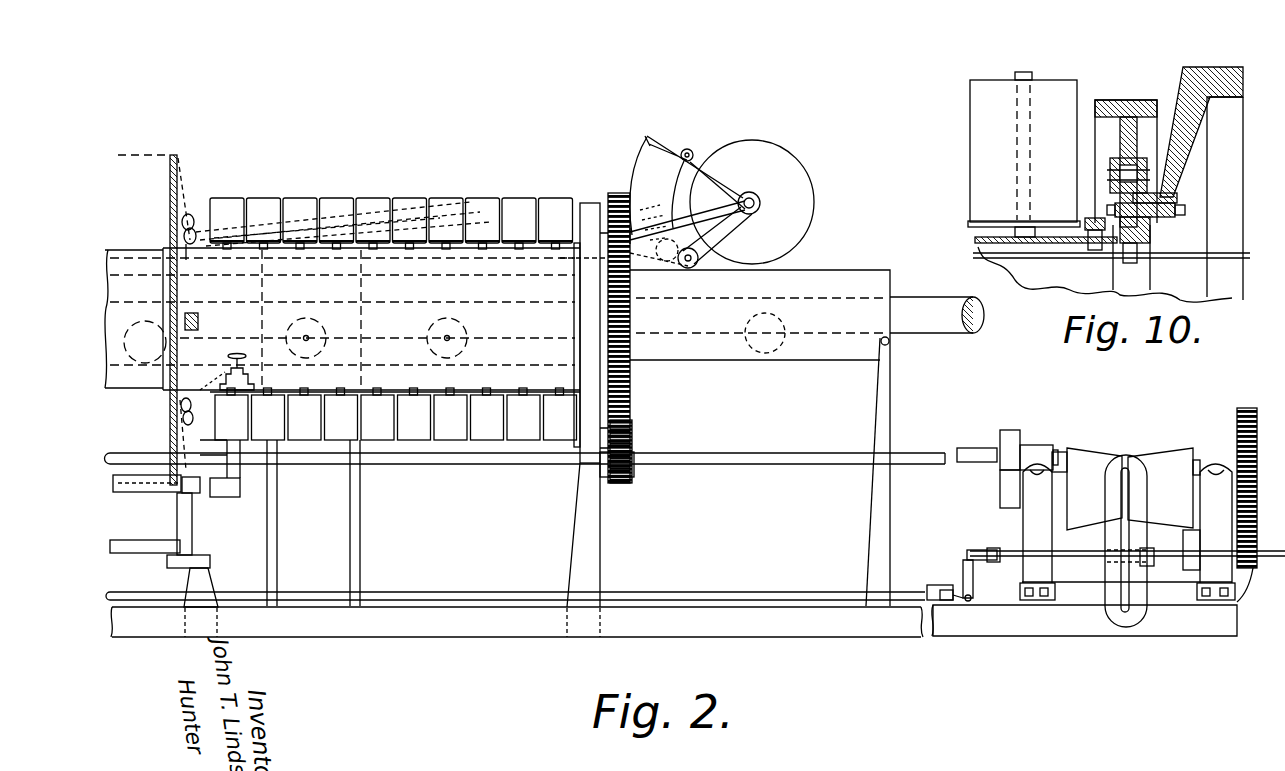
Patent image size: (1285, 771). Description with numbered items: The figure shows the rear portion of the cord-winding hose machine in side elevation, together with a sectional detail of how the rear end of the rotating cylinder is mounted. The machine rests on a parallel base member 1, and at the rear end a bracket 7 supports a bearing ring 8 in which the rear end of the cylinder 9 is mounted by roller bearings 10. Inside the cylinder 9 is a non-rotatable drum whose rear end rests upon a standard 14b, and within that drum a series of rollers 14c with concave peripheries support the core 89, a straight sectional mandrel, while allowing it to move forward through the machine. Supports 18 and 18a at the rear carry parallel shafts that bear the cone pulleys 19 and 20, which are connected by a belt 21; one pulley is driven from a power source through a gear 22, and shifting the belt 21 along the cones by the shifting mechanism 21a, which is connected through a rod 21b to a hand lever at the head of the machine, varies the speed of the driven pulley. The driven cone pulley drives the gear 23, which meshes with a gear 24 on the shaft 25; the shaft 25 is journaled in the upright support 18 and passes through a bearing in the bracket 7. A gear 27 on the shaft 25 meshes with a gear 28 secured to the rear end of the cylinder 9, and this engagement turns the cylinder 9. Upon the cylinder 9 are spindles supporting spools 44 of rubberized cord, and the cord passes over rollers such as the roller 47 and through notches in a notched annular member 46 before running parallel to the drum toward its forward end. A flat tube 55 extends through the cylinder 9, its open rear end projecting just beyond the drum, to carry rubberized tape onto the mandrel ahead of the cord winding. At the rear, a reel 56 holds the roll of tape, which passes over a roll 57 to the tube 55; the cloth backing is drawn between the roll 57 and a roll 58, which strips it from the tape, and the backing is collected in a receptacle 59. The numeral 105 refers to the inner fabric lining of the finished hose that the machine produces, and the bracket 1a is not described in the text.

In FIG. 2, the base member 1 is at (674, 621).
In FIG. 2, the bracket 1a is at (213, 580).
In FIG. 2, the bracket 7 is at (578, 530).
In FIG. 2, the bearing ring 8 is at (589, 203).
In FIG. 10, the bearing ring 8 is at (1128, 100).
In FIG. 2, the cylinder 9 is at (497, 427).
In FIG. 10, the cylinder 9 is at (973, 240).
In FIG. 10, the roller bearings 10 is at (1128, 177).
In FIG. 2, the standard 14b is at (890, 400).
In FIG. 2, the rollers 14c is at (781, 340).
In FIG. 2, the support 18 is at (1037, 532).
In FIG. 2, the support 18a is at (1128, 532).
In FIG. 2, the cone pulley 19 is at (1082, 458).
In FIG. 2, the cone pulley 20 is at (1164, 458).
In FIG. 2, the belt 21 is at (1130, 460).
In FIG. 2, the shifting mechanism 21a is at (1008, 552).
In FIG. 2, the rod 21b is at (716, 584).
In FIG. 2, the gear 22 is at (1240, 408).
In FIG. 2, the gear 23 is at (1000, 500).
In FIG. 2, the gear 24 is at (1008, 430).
In FIG. 2, the shaft 25 is at (420, 466).
In FIG. 2, the gear 27 is at (634, 440).
In FIG. 2, the gear 28 is at (632, 397).
In FIG. 10, the gear 28 is at (1192, 73).
In FIG. 2, the spools 44 is at (385, 190).
In FIG. 10, the spools 44 is at (1001, 154).
In FIG. 2, the annular member 46 is at (192, 150).
In FIG. 2, the roller 47 is at (194, 215).
In FIG. 2, the flat tube 55 is at (577, 259).
In FIG. 10, the flat tube 55 is at (1223, 254).
In FIG. 2, the reel 56 is at (766, 153).
In FIG. 2, the roll 57 is at (700, 259).
In FIG. 2, the roll 58 is at (690, 151).
In FIG. 2, the receptacle 59 is at (657, 152).
In FIG. 2, the core 89 is at (937, 315).
In FIG. 2, the inner fabric lining 105 is at (158, 480).